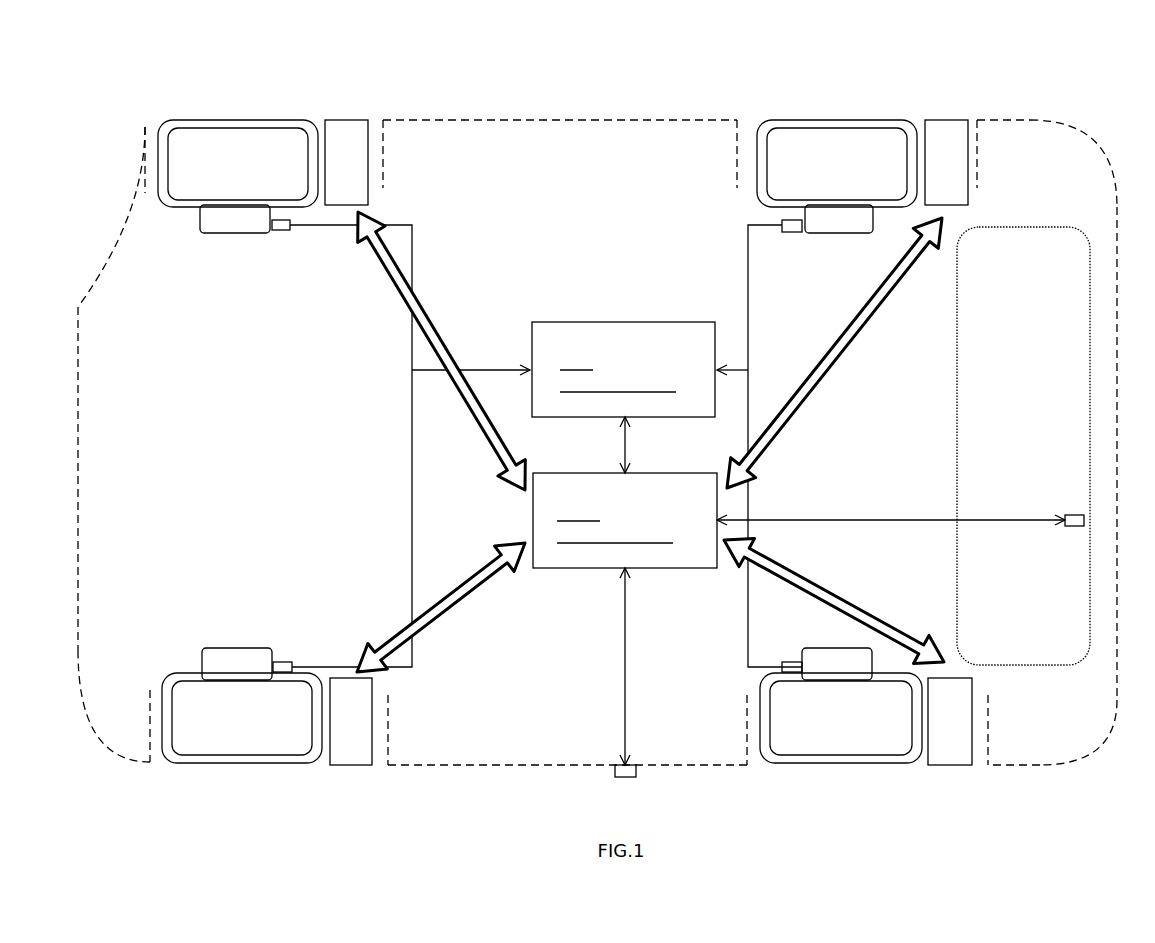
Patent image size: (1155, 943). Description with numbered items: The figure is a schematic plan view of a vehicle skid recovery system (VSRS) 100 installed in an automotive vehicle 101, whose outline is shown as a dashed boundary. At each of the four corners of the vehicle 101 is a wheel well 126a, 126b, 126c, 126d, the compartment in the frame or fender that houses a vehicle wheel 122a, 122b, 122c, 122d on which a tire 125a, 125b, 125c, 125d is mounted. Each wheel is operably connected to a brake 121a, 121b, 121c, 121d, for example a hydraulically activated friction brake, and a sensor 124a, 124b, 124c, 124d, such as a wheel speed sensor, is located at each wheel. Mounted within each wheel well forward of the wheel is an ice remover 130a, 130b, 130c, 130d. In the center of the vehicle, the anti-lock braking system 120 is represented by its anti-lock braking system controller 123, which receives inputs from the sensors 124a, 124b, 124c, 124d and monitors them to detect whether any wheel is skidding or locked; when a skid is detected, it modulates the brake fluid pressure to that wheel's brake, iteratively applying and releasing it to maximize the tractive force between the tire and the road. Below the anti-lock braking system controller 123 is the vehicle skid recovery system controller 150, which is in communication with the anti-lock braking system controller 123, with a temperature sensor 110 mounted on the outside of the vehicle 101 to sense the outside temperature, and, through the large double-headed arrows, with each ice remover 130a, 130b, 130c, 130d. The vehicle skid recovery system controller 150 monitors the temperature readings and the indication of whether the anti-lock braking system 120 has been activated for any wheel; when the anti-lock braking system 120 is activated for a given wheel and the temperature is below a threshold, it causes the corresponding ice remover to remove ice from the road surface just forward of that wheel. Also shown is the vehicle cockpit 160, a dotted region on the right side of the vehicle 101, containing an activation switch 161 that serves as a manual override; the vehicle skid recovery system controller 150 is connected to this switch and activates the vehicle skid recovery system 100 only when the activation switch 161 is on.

The vehicle skid recovery system 100 is at (172, 66).
The automotive vehicle 101 is at (1118, 441).
The temperature sensor 110 is at (637, 771).
The anti-lock braking system 120 is at (632, 302).
The anti-lock braking system controller 123 is at (661, 346).
The vehicle skid recovery system controller 150 is at (658, 506).
The vehicle cockpit 160 is at (992, 437).
The activation switch 161 is at (1072, 527).
The brake 121a is at (820, 230).
The brake 121b is at (818, 672).
The brake 121c is at (216, 230).
The brake 121d is at (218, 672).
The vehicle wheel 122a is at (818, 175).
The vehicle wheel 122b is at (822, 730).
The vehicle wheel 122c is at (219, 175).
The vehicle wheel 122d is at (223, 730).
The sensor 124a is at (793, 233).
The sensor 124b is at (793, 661).
The sensor 124c is at (284, 231).
The sensor 124d is at (281, 661).
The tire 125a is at (883, 119).
The tire 125b is at (890, 765).
The tire 125c is at (285, 119).
The tire 125d is at (288, 765).
The wheel well 126a is at (979, 159).
The wheel well 126b is at (990, 708).
The wheel well 126c is at (386, 147).
The wheel well 126d is at (390, 719).
The ice remover 130a is at (966, 165).
The ice remover 130b is at (931, 730).
The ice remover 130c is at (366, 165).
The ice remover 130d is at (332, 723).